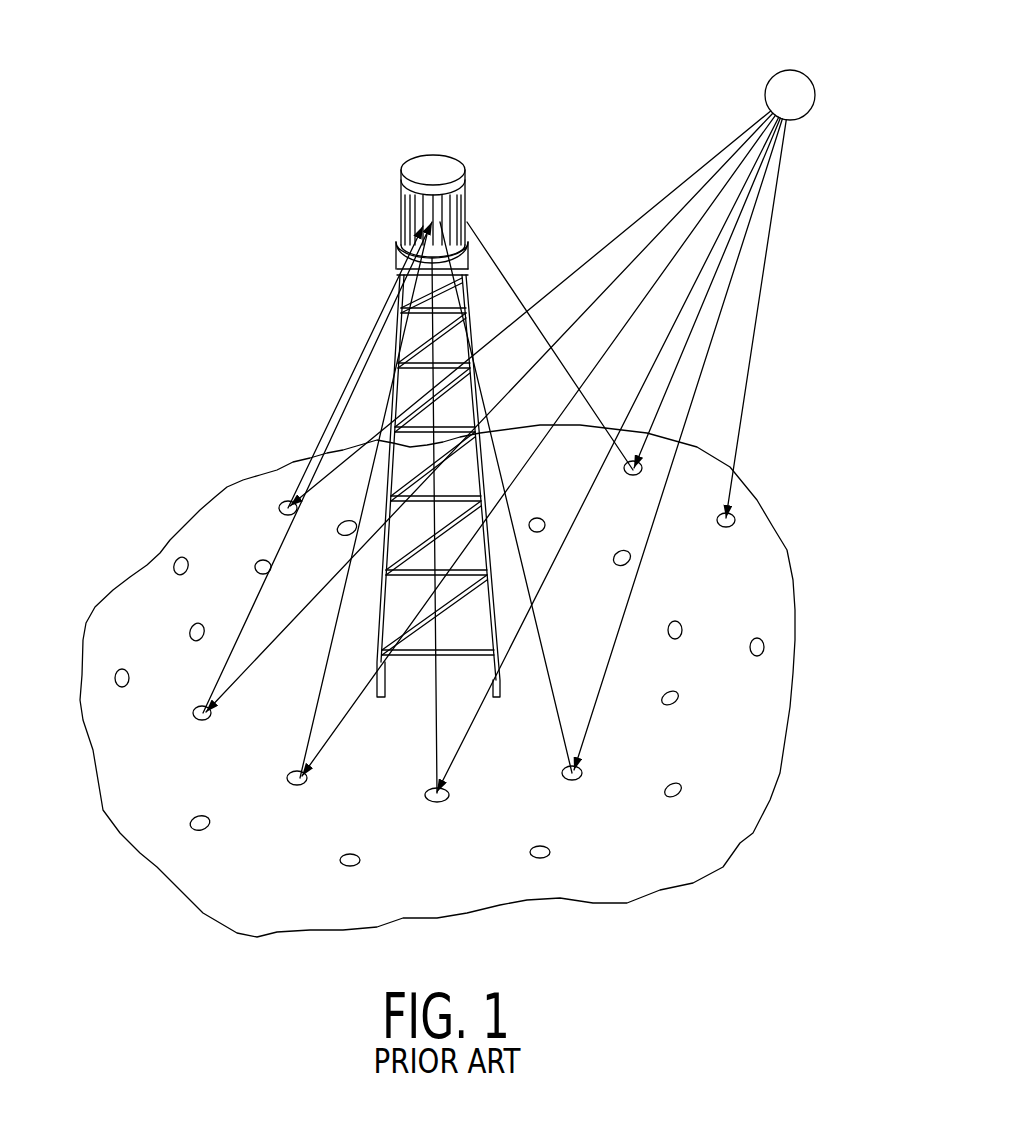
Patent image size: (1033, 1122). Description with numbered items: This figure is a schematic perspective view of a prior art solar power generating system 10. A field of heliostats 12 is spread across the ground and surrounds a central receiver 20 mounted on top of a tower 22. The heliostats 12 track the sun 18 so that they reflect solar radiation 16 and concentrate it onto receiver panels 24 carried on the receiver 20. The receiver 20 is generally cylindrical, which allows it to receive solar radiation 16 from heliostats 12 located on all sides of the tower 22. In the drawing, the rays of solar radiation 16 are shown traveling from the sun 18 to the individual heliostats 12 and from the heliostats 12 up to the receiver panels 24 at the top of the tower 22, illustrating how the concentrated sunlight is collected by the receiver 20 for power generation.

The solar power generating system 10 is at (165, 450).
The heliostats 12 is at (285, 500).
The solar radiation 16 is at (337, 412).
The sun 18 is at (790, 80).
The central receiver 20 is at (428, 140).
The tower 22 is at (476, 288).
The receiver panels 24 is at (402, 197).